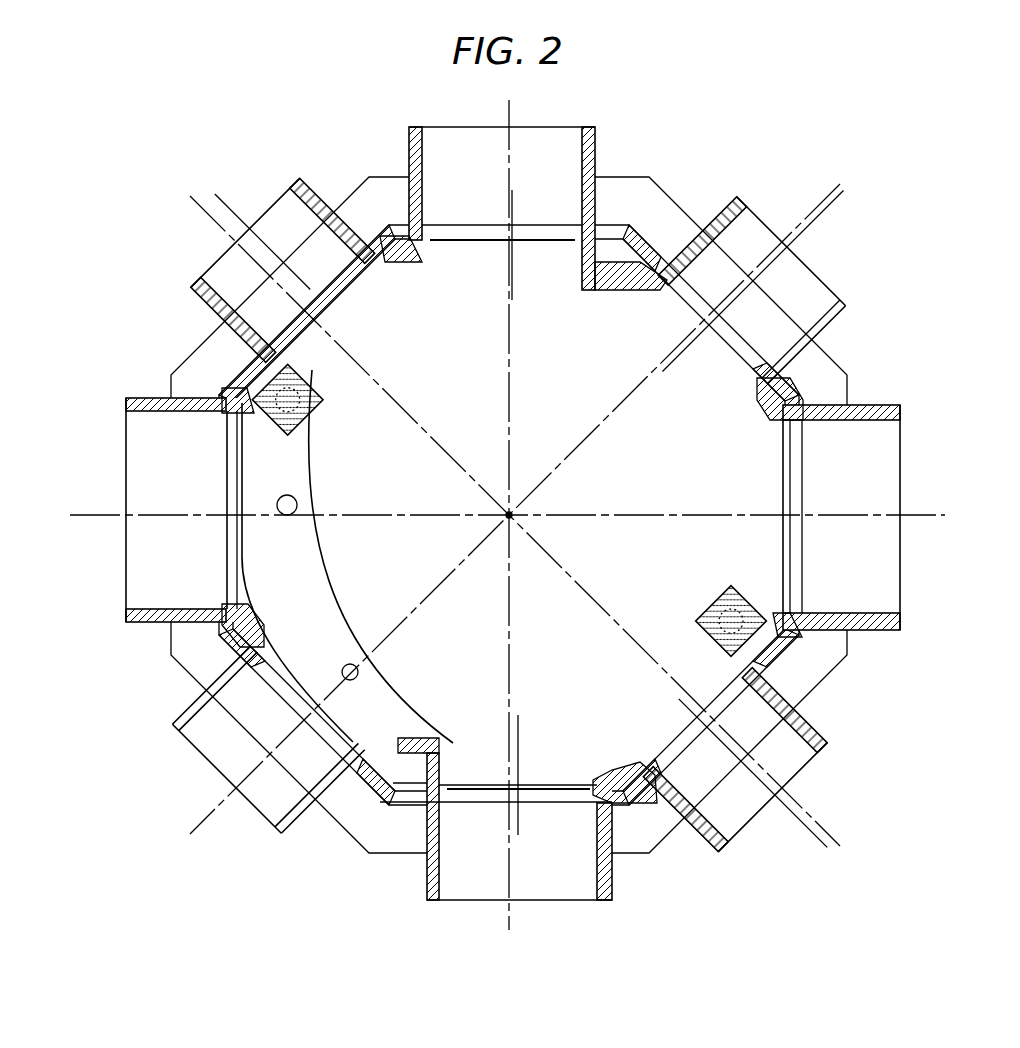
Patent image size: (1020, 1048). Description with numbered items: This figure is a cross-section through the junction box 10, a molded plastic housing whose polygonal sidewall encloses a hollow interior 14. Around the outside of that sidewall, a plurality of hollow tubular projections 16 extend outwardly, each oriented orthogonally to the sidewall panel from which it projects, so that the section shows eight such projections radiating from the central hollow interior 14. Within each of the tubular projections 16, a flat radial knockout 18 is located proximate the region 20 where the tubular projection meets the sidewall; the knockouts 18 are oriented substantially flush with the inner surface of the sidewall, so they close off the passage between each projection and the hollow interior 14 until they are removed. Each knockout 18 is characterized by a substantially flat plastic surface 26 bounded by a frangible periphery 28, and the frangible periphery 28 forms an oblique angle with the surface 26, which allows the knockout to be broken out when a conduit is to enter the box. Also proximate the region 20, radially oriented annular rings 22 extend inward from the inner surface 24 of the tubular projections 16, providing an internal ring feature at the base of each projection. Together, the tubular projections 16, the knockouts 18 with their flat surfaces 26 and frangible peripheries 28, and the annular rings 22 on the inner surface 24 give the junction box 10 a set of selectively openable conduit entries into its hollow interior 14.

The junction box 10 is at (470, 527).
The hollow interior 14 is at (507, 515).
The tubular projections 16 is at (471, 856).
The knockouts 18 is at (537, 792).
The region 20 is at (428, 800).
The annular rings 22 is at (350, 740).
The inner surface 24 is at (257, 659).
The flat plastic surface 26 is at (232, 538).
The frangible periphery 28 is at (232, 430).